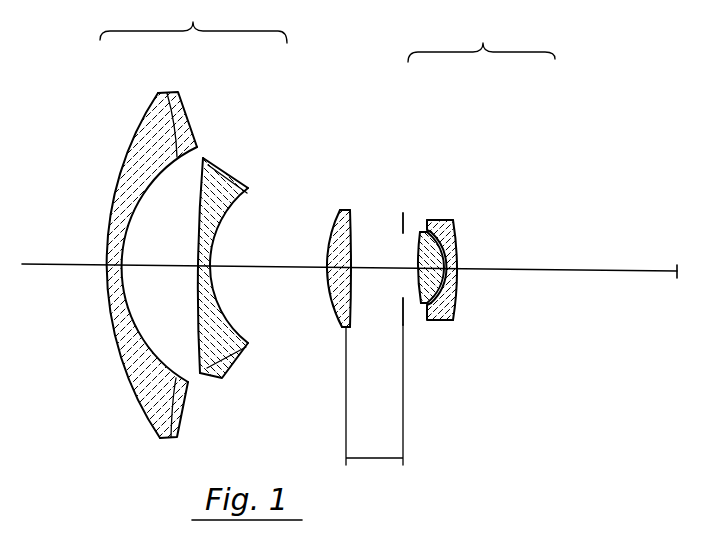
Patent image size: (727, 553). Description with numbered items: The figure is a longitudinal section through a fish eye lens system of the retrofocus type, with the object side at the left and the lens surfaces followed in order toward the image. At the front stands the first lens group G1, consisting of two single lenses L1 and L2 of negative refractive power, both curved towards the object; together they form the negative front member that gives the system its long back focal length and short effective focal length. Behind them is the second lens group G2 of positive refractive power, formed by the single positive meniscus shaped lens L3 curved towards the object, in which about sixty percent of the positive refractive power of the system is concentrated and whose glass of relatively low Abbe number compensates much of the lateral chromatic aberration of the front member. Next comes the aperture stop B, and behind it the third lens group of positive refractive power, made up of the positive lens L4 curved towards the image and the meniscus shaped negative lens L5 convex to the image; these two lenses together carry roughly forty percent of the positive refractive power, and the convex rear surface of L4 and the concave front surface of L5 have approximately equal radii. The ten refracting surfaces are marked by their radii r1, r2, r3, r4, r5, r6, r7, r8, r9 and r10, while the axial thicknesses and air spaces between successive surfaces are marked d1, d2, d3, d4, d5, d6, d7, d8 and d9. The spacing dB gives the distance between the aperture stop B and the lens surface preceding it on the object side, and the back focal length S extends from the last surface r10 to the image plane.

The first lens group G1 is at (193, 21).
The second lens group G2 is at (481, 41).
The single lens L1 is at (157, 238).
The single lens L2 is at (240, 222).
The positive lens L3 is at (337, 196).
The positive lens L4 is at (426, 187).
The meniscus shaped negative lens L5 is at (487, 195).
The aperture stop B is at (403, 216).
The back focal length S is at (557, 270).
The radius of first lens surface r1 is at (146, 123).
The radius of second lens surface r2 is at (178, 118).
The radius of third lens surface r3 is at (205, 170).
The radius of fourth lens surface r4 is at (249, 191).
The radius of fifth lens surface r5 is at (330, 226).
The radius of sixth lens surface r6 is at (361, 239).
The radius of seventh lens surface r7 is at (418, 237).
The radius of eighth lens surface r8 is at (439, 227).
The radius of ninth lens surface r9 is at (440, 220).
The radius of tenth lens surface r10 is at (458, 242).
The distance between first and second lens surfaces d1 is at (111, 266).
The distance between second and third lens surfaces d2 is at (153, 266).
The distance between third and fourth lens surfaces d3 is at (220, 375).
The distance between fourth and fifth lens surfaces d4 is at (272, 268).
The distance between fifth and sixth lens surfaces d5 is at (323, 268).
The distance between sixth and seventh lens surfaces d6 is at (378, 270).
The distance between seventh and eighth lens surfaces d7 is at (420, 305).
The distance between eighth and ninth lens surfaces d8 is at (445, 320).
The distance between ninth and tenth lens surfaces d9 is at (457, 300).
The distance between aperture stop and preceding lens surface dB is at (370, 460).